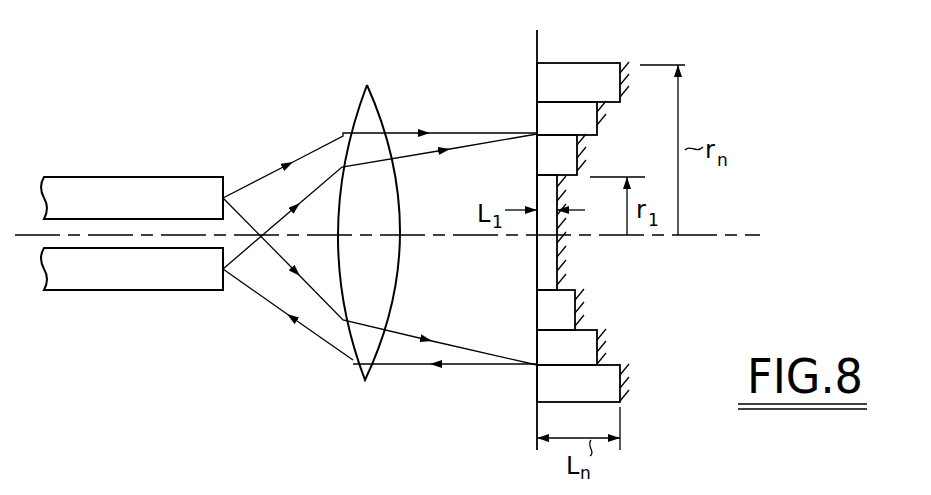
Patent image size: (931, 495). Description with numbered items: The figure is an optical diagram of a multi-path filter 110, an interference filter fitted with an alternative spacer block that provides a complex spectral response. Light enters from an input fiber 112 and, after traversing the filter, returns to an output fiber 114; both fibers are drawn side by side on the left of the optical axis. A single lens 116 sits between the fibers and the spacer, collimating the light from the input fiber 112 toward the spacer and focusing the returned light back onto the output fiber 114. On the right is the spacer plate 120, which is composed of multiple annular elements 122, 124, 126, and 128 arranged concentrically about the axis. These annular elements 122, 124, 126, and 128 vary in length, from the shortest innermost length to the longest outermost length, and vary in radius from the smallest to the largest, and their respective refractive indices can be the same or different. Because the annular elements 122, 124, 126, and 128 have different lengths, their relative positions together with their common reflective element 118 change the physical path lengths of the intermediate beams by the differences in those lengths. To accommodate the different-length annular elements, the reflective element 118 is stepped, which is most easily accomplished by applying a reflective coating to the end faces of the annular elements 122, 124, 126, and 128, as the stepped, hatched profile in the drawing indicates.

The multi-path filter 110 is at (254, 93).
The input fiber 112 is at (122, 186).
The output fiber 114 is at (130, 278).
The lens 116 is at (360, 372).
The reflective element 118 is at (580, 233).
The spacer plate 120 is at (561, 60).
The annular element 122 is at (542, 254).
The annular element 124 is at (545, 153).
The annular element 126 is at (545, 347).
The annular element 128 is at (545, 77).